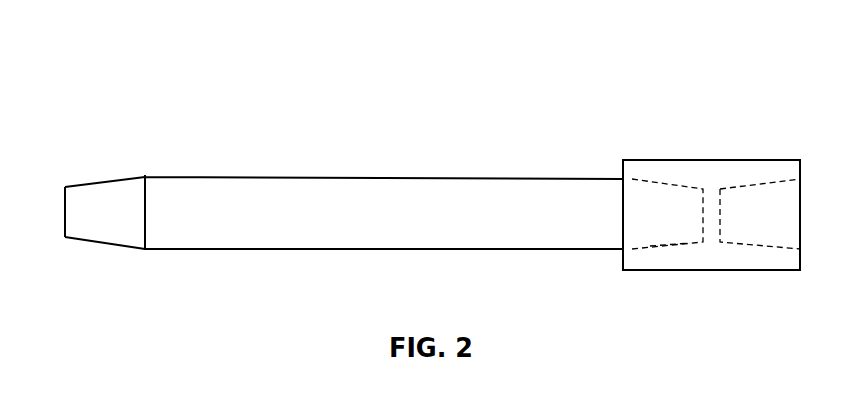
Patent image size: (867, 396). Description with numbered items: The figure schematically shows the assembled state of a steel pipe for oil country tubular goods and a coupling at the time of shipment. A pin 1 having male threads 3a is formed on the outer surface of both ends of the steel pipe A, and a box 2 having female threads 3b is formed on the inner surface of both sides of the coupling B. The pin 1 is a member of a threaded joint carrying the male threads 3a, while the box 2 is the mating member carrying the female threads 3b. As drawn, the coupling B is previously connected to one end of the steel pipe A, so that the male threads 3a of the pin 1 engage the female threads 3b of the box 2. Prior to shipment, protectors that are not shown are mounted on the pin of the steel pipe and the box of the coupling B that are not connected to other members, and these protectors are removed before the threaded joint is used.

The pin 1 is at (113, 170).
The box 2 is at (664, 153).
The male threads 3a is at (81, 182).
The female threads 3b is at (666, 245).
The steel pipe A is at (415, 129).
The coupling B is at (738, 126).